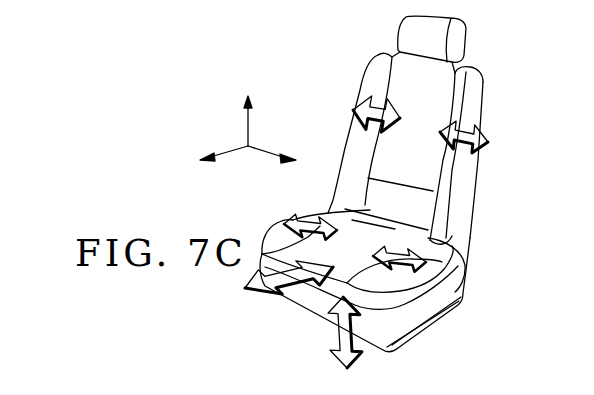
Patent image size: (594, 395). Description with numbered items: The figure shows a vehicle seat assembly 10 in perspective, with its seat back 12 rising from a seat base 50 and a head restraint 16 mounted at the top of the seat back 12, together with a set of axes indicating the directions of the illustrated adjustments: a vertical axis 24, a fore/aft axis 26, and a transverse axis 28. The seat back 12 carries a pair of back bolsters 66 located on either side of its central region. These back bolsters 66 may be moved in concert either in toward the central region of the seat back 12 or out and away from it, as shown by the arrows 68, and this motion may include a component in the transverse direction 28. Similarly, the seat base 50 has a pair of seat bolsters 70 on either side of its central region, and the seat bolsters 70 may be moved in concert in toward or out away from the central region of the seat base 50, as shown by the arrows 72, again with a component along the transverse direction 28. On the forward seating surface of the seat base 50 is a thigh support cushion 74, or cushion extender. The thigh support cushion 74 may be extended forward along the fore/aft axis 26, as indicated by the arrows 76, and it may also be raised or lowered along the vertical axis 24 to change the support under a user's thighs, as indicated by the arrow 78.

The vehicle seat assembly 10 is at (299, 48).
The seat back 12 is at (409, 69).
The head restraint 16 is at (467, 42).
The vertical axis 24 is at (246, 126).
The fore/aft axis 26 is at (226, 148).
The transverse axis 28 is at (268, 150).
The seat base 50 is at (420, 288).
The back bolsters 66 is at (378, 73).
The arrows 68 is at (354, 110).
The seat bolsters 70 is at (278, 232).
The arrows 72 is at (331, 224).
The thigh support cushion 74 is at (317, 288).
The arrows 76 is at (246, 292).
The arrow 78 is at (335, 351).